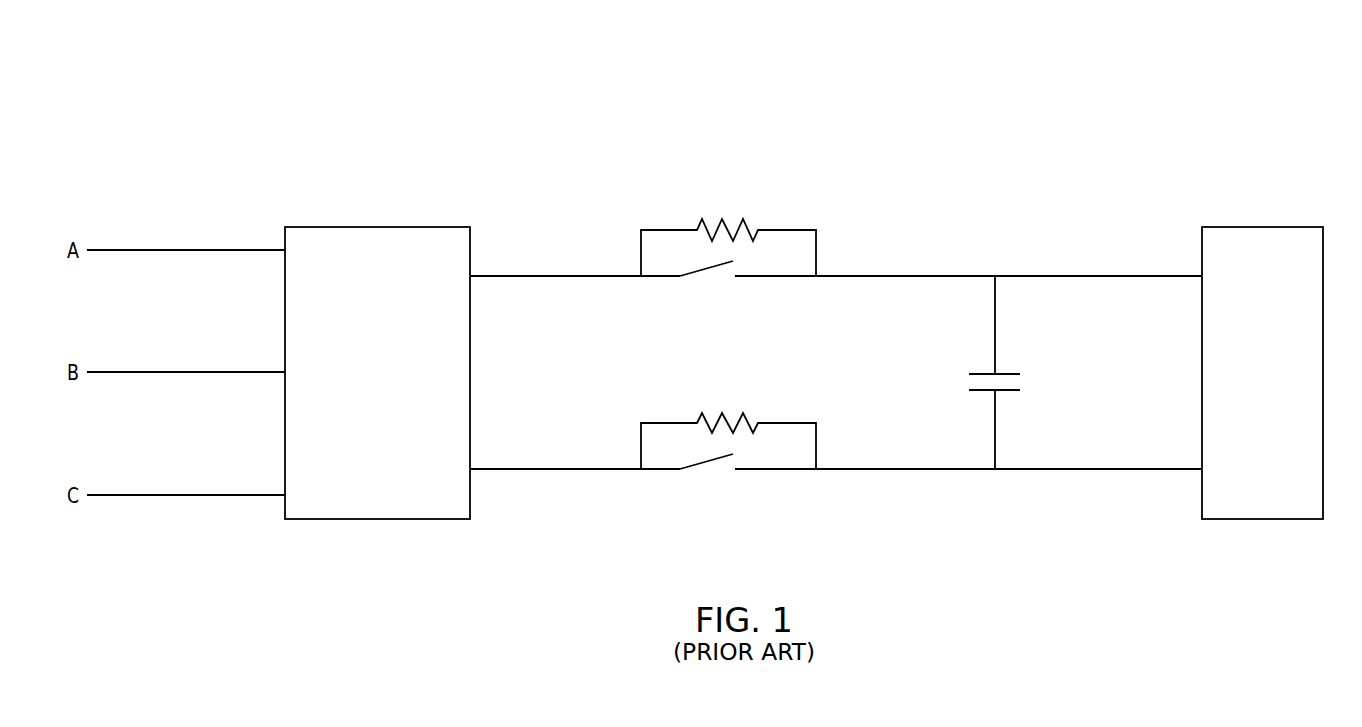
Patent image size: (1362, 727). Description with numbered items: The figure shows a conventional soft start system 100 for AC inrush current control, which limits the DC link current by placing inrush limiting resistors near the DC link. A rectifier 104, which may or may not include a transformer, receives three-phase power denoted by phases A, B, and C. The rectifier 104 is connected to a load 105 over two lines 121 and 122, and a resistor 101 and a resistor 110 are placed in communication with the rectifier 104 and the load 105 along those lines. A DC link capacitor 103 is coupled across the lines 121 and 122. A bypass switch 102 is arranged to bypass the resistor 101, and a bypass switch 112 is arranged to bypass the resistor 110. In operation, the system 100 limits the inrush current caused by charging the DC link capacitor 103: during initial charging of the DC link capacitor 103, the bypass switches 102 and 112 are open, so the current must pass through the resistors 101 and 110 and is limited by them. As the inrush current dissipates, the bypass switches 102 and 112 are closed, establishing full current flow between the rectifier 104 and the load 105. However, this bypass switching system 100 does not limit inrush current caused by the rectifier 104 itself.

The system 100 is at (1273, 120).
The resistor 101 is at (702, 220).
The bypass switch 102 is at (708, 268).
The DC link capacitor 103 is at (1013, 374).
The rectifier 104 is at (342, 227).
The load 105 is at (1292, 227).
The resistor 110 is at (702, 413).
The bypass switch 112 is at (708, 462).
The line 121 is at (1075, 276).
The line 122 is at (1075, 469).